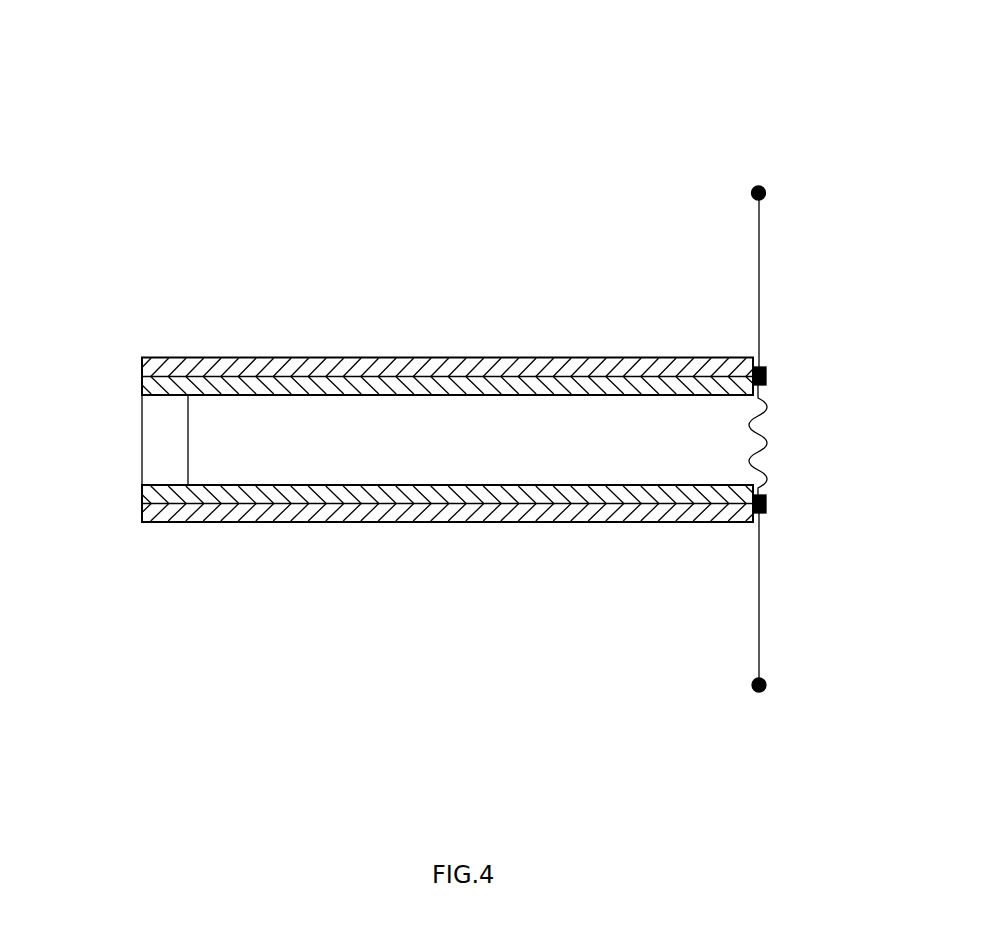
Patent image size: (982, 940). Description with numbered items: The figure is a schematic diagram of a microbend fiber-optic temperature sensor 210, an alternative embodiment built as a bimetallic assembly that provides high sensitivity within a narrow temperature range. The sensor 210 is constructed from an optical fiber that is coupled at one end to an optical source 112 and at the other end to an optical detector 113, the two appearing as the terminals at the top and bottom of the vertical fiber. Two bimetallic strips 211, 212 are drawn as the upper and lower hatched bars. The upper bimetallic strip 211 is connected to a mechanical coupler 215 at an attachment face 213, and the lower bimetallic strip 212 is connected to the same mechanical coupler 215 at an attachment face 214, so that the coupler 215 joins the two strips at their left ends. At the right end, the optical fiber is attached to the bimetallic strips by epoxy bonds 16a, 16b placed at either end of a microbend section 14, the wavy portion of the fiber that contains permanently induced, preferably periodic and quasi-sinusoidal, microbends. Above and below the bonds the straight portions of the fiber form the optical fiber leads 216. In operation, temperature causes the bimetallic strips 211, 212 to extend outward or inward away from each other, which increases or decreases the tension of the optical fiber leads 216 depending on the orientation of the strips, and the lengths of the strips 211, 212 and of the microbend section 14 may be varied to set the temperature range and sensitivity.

The microbend fiber-optic temperature sensor 210 is at (434, 172).
The bimetallic strip 211 is at (370, 350).
The bimetallic strip 212 is at (470, 530).
The attachment face 213 is at (142, 394).
The attachment face 214 is at (142, 486).
The mechanical coupler 215 is at (171, 427).
The optical fiber leads 216 is at (757, 284).
The optical source 112 is at (762, 179).
The optical detector 113 is at (762, 699).
The microbend section 14 is at (773, 427).
The epoxy bond 16a is at (773, 514).
The epoxy bond 16b is at (772, 368).